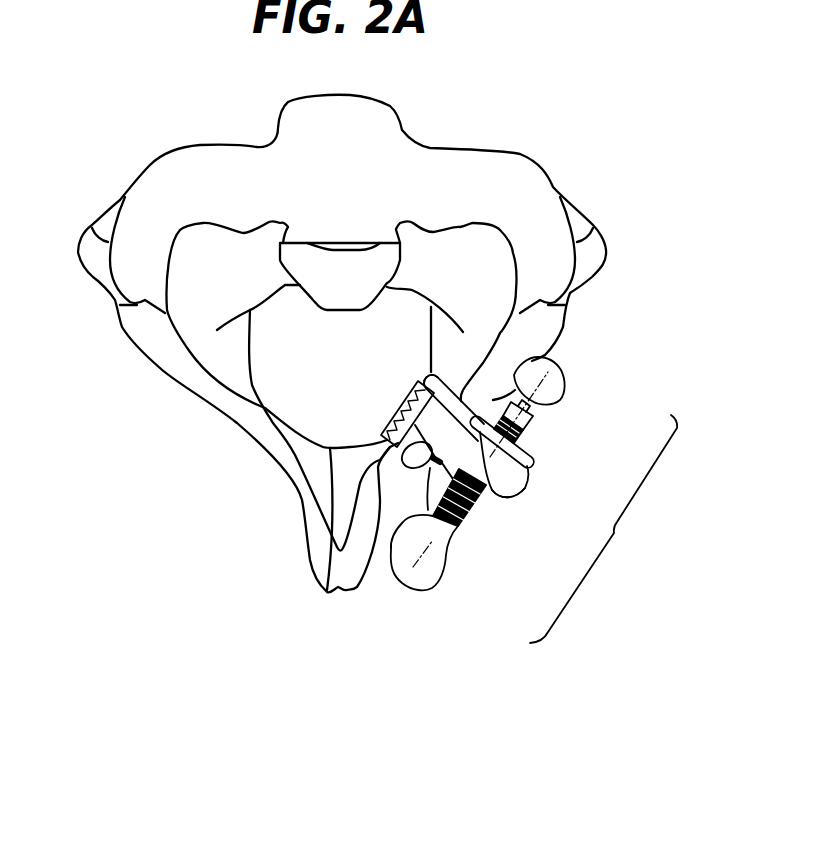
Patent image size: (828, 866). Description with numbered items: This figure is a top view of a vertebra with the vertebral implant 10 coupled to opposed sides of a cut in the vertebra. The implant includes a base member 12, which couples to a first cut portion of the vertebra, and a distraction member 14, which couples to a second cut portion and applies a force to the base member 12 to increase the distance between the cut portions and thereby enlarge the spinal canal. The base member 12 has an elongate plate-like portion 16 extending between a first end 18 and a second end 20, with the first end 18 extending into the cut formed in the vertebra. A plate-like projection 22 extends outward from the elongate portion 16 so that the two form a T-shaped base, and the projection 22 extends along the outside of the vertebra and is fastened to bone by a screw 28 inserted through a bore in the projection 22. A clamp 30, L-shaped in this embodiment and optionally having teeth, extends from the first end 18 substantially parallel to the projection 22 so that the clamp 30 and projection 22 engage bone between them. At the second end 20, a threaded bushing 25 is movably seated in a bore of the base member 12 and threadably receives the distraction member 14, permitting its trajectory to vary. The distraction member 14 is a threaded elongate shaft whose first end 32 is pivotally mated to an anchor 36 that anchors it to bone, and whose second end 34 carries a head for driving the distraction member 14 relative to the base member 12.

The vertebral implant 10 is at (603, 529).
The base member 12 is at (521, 490).
The distraction member 14 is at (469, 528).
The elongate plate-like portion 16 is at (468, 446).
The first end 18 is at (430, 372).
The second end 20 is at (502, 503).
The projection 22 is at (405, 467).
The threaded bushing 25 is at (524, 454).
The screw 28 is at (433, 510).
The clamp 30 is at (404, 392).
The first end 32 is at (533, 419).
The second end 34 is at (433, 585).
The anchor 36 is at (565, 380).